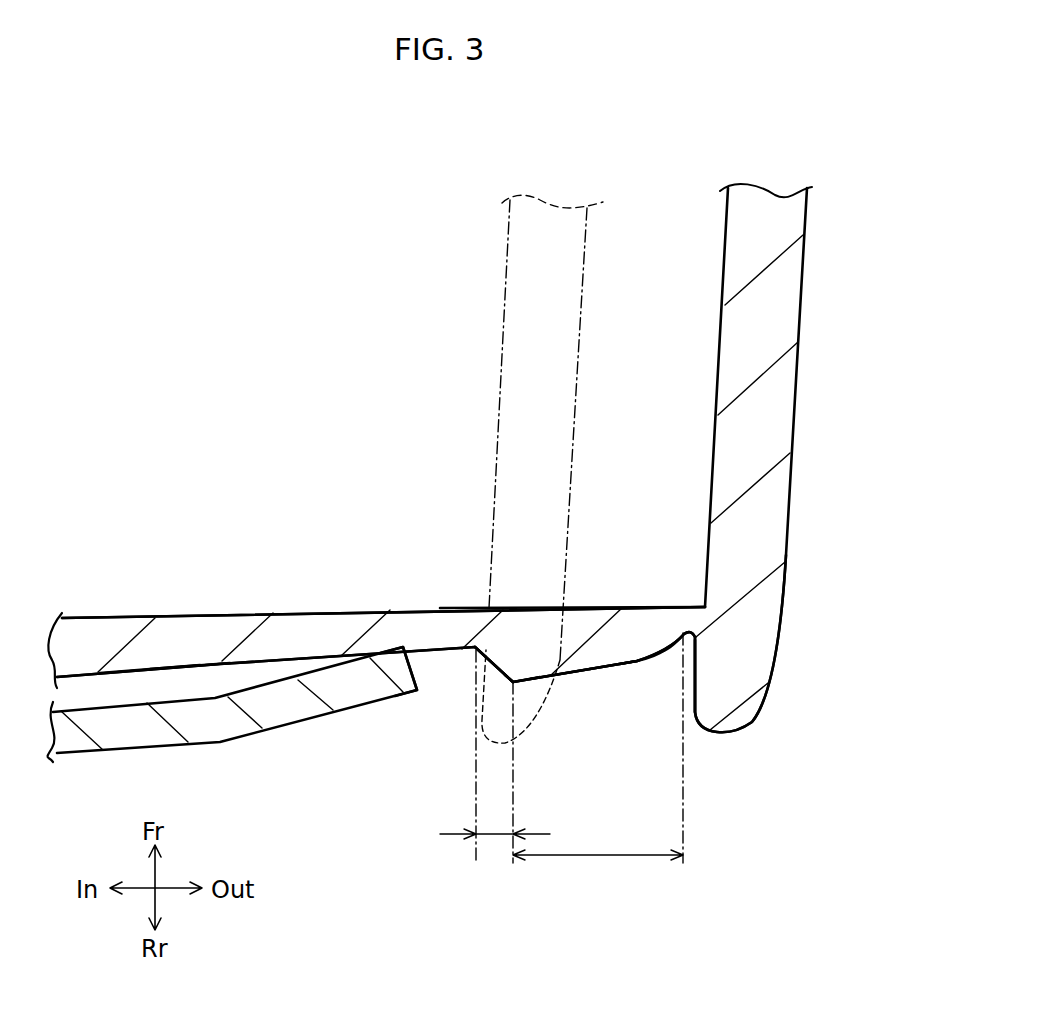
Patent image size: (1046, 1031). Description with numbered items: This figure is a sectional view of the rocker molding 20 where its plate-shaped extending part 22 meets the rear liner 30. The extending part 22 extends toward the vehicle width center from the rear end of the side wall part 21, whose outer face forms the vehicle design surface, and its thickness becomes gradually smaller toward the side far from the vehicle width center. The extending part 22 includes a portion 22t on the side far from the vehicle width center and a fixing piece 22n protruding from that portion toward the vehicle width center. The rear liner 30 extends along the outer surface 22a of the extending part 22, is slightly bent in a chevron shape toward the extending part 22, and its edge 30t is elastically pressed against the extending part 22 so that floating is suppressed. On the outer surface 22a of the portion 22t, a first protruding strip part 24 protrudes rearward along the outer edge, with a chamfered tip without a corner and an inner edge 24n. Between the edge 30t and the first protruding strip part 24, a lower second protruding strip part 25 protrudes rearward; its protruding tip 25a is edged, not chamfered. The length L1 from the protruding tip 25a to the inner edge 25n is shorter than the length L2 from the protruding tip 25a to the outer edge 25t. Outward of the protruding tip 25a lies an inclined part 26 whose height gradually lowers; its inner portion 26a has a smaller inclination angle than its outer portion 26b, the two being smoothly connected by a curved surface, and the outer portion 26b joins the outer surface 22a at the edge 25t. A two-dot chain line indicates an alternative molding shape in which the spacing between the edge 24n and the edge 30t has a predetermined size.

The rocker molding 20 is at (806, 214).
The side wall part 21 is at (791, 279).
The extending part 22 is at (215, 617).
The outer surface 22a is at (145, 677).
The fixing piece 22n is at (183, 667).
The portion on the side far from the vehicle width center position 22t is at (438, 608).
The first protruding strip part 24 is at (742, 729).
The edge of the first protruding strip part on the side near the vehicle width cente 24n is at (695, 655).
The second protruding strip part 25 is at (595, 670).
The protruding tip of the second protruding strip part 25a is at (517, 684).
The edge of the second protruding strip part on the side near the vehicle width cent 25n is at (470, 648).
The edge of the second protruding strip part on the side far from the vehicle width 25t is at (680, 645).
The inclined part 26 is at (617, 665).
The portion of the inclined part on the vehicle width center side 26a is at (554, 672).
The portion of the inclined part on the side far from the vehicle width center posit 26b is at (647, 657).
The rear liner 30 is at (208, 744).
The edge of the rear liner on the side far from the vehicle width center position 30t is at (416, 682).
The length from the protruding tip to the edge near the vehicle width center positio L1 is at (495, 836).
The length from the protruding tip to the edge far from the vehicle width center pos L2 is at (600, 857).